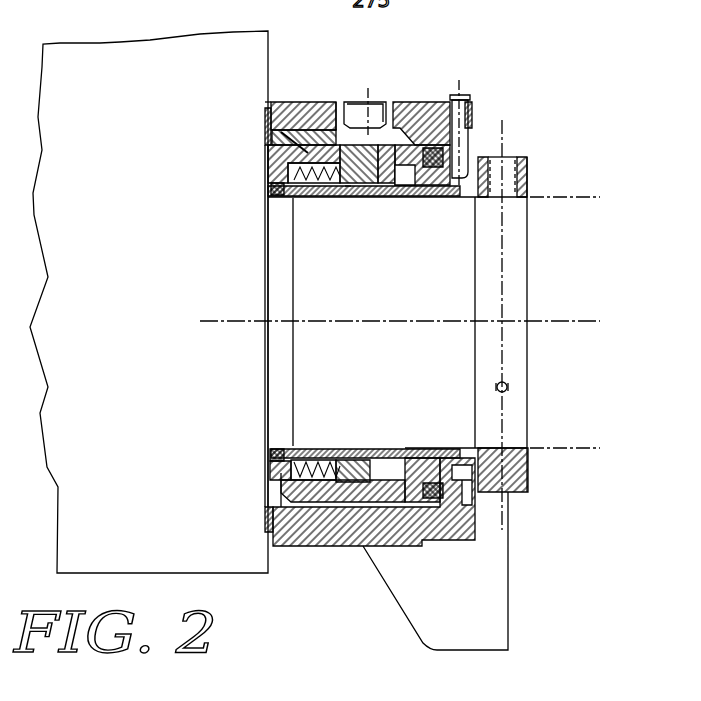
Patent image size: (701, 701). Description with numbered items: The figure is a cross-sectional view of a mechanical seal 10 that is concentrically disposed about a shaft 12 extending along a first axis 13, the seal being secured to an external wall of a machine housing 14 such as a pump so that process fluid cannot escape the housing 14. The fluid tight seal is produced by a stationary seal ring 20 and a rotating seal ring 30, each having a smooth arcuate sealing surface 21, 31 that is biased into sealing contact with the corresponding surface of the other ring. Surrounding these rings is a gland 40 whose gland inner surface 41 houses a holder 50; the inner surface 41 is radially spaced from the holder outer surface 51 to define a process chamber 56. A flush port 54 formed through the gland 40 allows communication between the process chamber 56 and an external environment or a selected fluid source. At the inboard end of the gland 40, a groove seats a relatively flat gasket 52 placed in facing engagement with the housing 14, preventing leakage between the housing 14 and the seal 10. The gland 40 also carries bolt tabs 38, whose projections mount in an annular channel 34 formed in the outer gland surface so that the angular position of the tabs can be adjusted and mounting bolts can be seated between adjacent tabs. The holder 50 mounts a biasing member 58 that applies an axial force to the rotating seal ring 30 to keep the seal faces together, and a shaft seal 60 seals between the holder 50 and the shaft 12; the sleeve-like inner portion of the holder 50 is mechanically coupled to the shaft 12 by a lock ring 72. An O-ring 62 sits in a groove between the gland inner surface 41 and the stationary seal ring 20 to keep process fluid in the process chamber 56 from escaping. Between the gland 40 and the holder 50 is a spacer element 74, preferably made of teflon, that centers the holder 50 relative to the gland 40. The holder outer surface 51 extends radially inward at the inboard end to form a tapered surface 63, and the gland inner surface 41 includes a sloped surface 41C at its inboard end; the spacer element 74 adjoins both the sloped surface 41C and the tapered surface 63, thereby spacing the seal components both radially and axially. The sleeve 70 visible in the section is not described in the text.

The mechanical seal 10 is at (543, 60).
The shaft 12 is at (563, 192).
The first axis 13 is at (575, 320).
The machine housing 14 is at (118, 72).
The stationary seal ring 20 is at (410, 196).
The sealing surface 21 is at (406, 186).
The rotating seal ring 30 is at (368, 195).
The sealing surface 31 is at (388, 186).
The annular channel 34 is at (468, 508).
The bolt tabs 38 is at (509, 575).
The gland 40 is at (406, 100).
The gland inner surface 41 is at (278, 136).
The sloped surface 41C is at (268, 104).
The holder 50 is at (302, 197).
The holder outer surface 51 is at (348, 198).
The gasket 52 is at (265, 126).
The flush port 54 is at (381, 112).
The process chamber 56 is at (330, 134).
The biasing member 58 is at (310, 450).
The shaft seal 60 is at (282, 447).
The O-ring 62 is at (437, 458).
The tapered surface 63 is at (270, 187).
The sleeve 70 is at (348, 448).
The lock ring 72 is at (508, 167).
The spacer element 74 is at (270, 152).